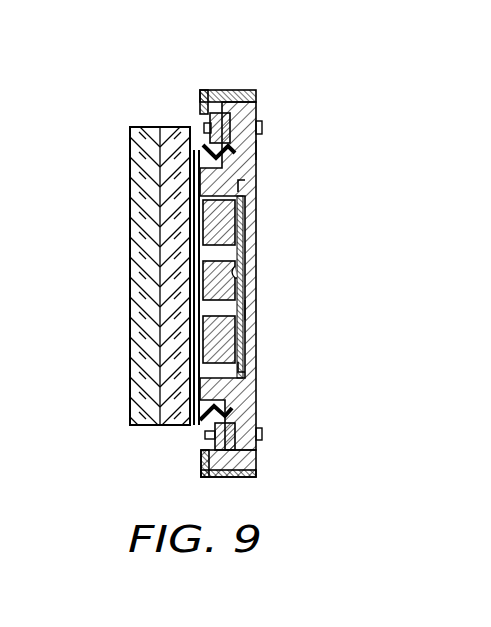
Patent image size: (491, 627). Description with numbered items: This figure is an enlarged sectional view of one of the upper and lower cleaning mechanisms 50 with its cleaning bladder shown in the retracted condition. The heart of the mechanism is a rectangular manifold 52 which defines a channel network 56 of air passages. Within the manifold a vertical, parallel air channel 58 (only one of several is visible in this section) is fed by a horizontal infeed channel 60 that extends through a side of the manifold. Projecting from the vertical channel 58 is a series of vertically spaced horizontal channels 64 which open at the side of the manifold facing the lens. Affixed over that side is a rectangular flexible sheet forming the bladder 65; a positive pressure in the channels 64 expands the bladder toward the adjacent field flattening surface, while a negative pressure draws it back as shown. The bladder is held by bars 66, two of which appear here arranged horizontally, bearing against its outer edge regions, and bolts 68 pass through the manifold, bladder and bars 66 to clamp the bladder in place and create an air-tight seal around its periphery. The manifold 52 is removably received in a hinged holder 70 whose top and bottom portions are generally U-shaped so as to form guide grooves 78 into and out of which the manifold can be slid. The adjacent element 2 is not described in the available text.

The wall panel (upper/lower) 2 is at (130, 268).
The cleaning mechanism 50 is at (283, 151).
The manifold 52 is at (256, 410).
The channel network 56 is at (251, 303).
The vertical air channel 58 is at (250, 225).
The infeed channel 60 is at (242, 273).
The horizontal channel 64 is at (240, 186).
The bladder 65 is at (203, 144).
The bar 66 is at (212, 112).
The bolt 68 is at (263, 128).
The hinged holder 70 is at (213, 89).
The guide groove 78 is at (247, 90).